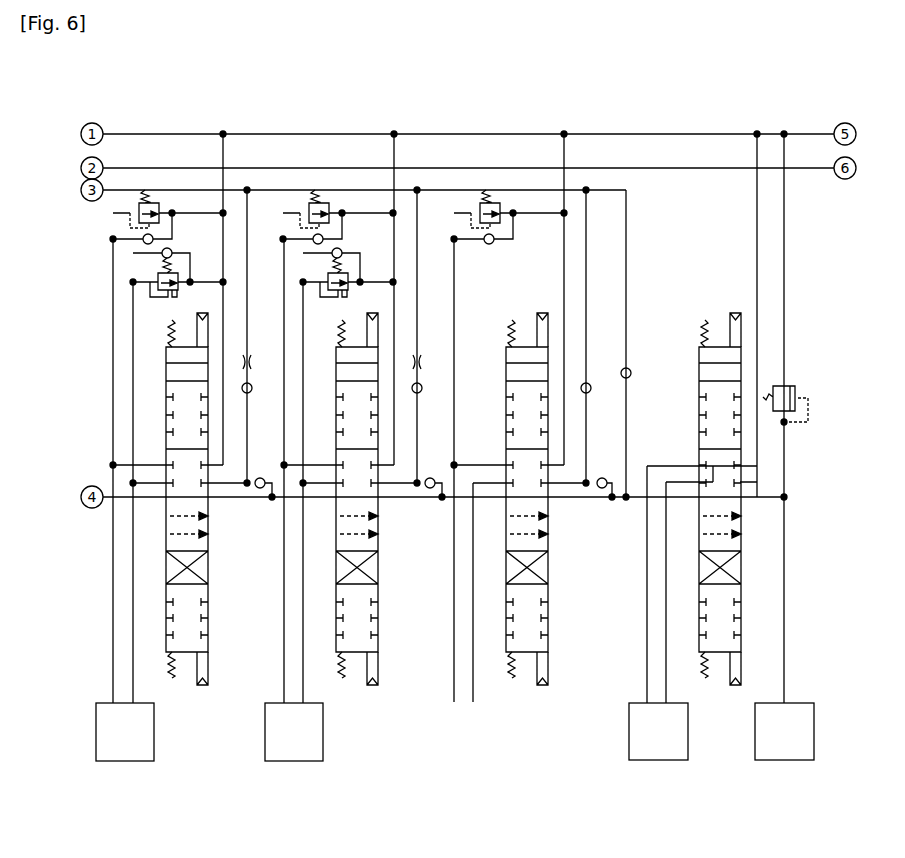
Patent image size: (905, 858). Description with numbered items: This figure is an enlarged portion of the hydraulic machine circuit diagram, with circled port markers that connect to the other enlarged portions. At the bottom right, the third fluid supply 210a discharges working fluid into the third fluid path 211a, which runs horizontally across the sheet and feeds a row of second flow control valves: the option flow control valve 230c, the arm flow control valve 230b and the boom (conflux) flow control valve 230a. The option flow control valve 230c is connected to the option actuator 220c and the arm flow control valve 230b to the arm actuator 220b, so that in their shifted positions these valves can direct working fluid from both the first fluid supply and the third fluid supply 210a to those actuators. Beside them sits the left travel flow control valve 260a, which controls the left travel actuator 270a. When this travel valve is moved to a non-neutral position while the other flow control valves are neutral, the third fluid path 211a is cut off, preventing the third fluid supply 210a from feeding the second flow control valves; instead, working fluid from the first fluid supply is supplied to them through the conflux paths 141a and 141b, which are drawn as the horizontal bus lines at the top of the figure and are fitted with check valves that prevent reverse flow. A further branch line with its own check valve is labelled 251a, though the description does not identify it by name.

The conflux path 141a is at (174, 189).
The conflux path 141b is at (687, 167).
The check valve line 251a is at (600, 189).
The third fluid path 211a is at (128, 499).
The left travel flow control valve 260a is at (740, 543).
The boom (conflux) flow control valve 230a is at (548, 556).
The arm flow control valve 230b is at (378, 556).
The option flow control valve 230c is at (208, 556).
The arm actuator 220b is at (290, 762).
The option actuator 220c is at (120, 762).
The left travel actuator 270a is at (652, 762).
The third fluid supply 210a is at (780, 762).